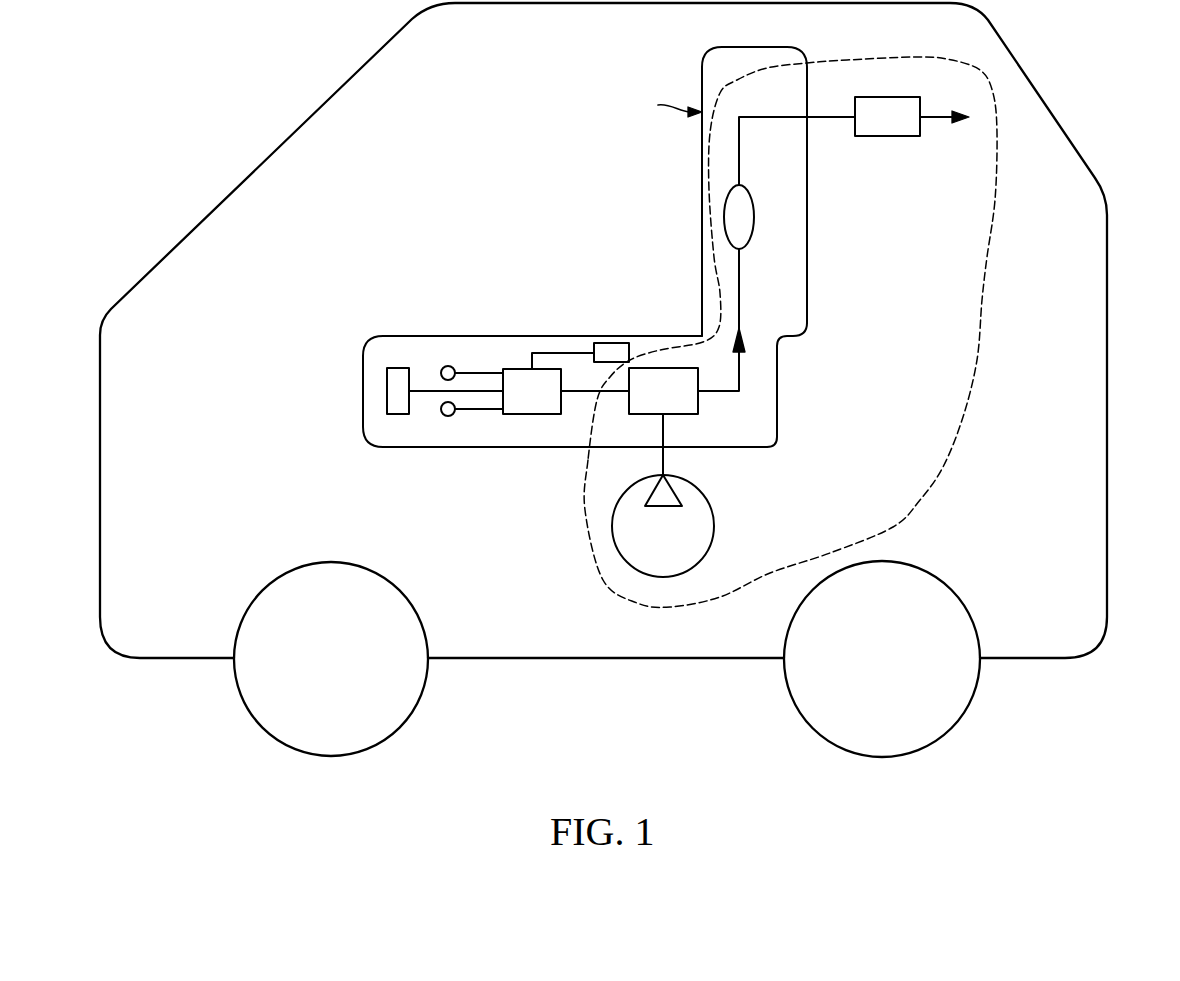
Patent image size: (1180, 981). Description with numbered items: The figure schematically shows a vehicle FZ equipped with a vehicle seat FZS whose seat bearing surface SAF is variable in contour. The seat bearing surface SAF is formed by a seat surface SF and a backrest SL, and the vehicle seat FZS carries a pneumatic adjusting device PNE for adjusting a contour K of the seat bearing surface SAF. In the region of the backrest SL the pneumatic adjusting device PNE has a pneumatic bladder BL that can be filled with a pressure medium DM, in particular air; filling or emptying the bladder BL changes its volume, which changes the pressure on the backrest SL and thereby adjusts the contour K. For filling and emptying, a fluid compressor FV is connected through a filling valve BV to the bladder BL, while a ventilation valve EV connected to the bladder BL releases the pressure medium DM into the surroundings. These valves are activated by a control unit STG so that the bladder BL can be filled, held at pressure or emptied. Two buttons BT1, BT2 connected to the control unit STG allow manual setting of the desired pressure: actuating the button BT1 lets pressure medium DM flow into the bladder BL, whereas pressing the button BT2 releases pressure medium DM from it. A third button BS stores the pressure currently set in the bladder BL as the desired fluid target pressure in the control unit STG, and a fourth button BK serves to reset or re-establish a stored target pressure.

The vehicle FZ is at (1107, 413).
The vehicle seat FZS is at (778, 382).
The seat surface SF is at (545, 336).
The backrest SL is at (702, 165).
The contour K is at (702, 213).
The seat bearing surface SAF is at (651, 105).
The ventilation valve EV is at (887, 136).
The pneumatic bladder BL is at (755, 217).
The pressure medium DM is at (743, 340).
The filling valve BV is at (683, 416).
The fluid compressor FV is at (716, 527).
The pneumatic adjusting device PNE is at (983, 295).
The fourth button BK is at (612, 343).
The control unit STG is at (532, 417).
The third button BS is at (387, 392).
The first button BT1 is at (449, 366).
The second button BT2 is at (448, 418).